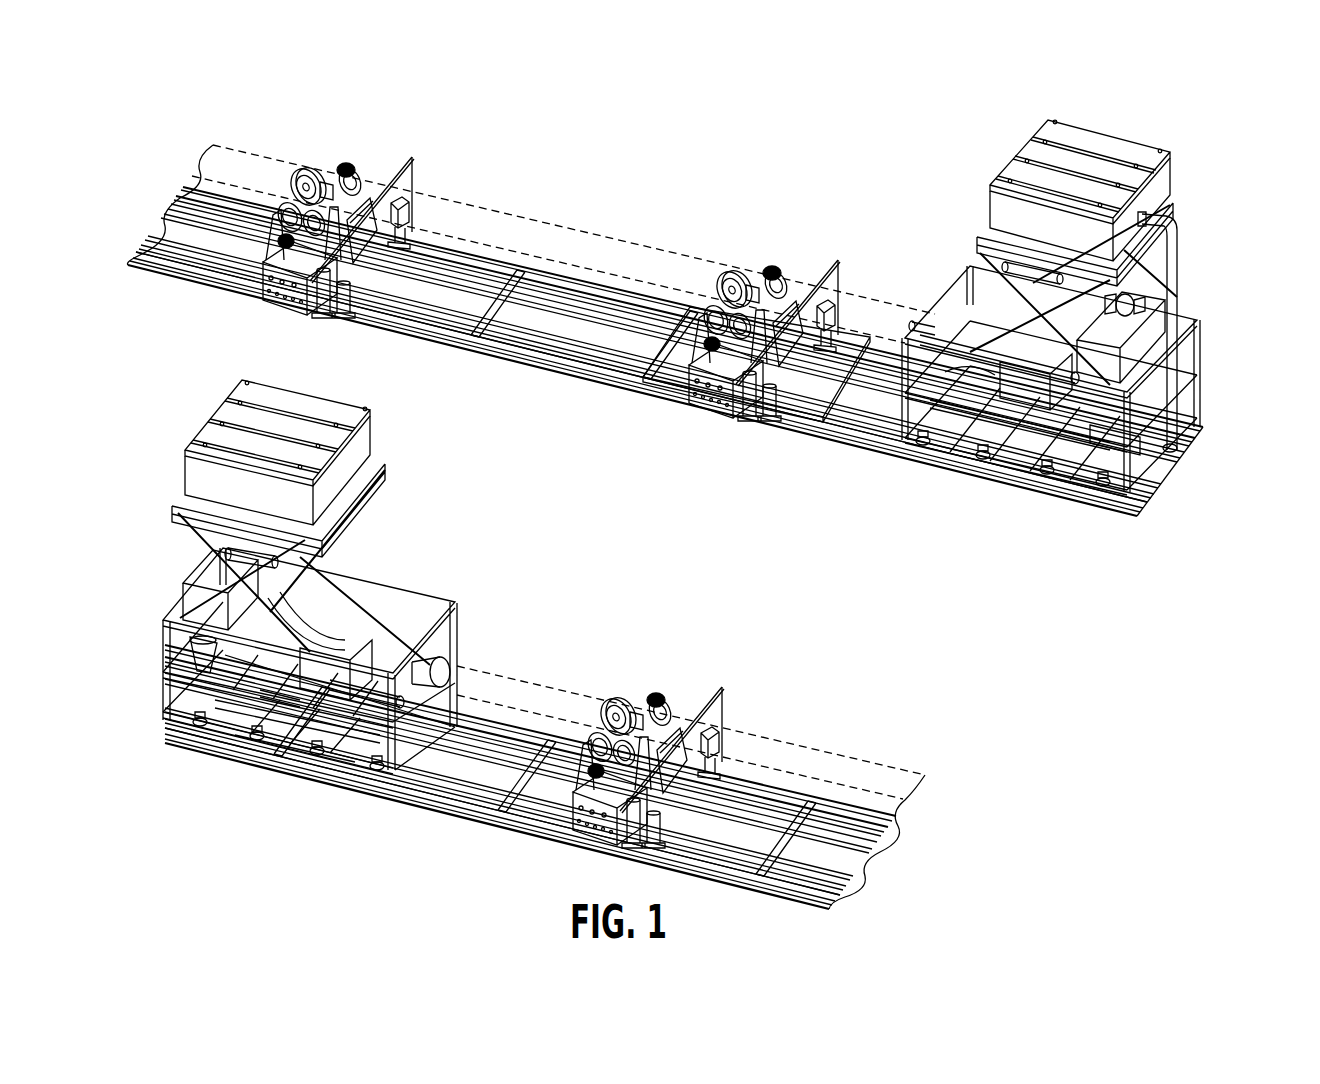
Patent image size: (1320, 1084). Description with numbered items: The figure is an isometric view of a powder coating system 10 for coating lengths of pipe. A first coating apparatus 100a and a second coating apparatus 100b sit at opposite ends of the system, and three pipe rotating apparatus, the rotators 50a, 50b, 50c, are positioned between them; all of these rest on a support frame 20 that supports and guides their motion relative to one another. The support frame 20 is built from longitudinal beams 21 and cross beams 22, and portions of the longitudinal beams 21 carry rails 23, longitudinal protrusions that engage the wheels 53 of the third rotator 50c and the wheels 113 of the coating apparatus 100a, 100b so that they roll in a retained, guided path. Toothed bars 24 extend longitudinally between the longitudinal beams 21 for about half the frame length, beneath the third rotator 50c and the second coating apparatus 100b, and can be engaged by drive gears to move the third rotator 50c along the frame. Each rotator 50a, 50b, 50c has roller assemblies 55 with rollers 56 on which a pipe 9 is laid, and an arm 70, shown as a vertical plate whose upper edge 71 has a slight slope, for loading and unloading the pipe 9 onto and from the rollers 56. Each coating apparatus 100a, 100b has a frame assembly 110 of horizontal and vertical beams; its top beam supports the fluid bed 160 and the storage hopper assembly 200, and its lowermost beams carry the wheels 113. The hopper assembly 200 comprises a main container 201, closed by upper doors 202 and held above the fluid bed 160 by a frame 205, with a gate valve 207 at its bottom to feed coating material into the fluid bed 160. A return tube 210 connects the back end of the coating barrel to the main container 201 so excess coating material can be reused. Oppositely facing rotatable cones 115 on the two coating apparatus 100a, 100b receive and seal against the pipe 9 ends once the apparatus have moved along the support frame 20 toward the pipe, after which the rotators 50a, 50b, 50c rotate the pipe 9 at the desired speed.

The powder coating system 10 is at (783, 118).
The pipe 9 is at (548, 222).
The support frame 20 is at (542, 835).
The longitudinal beams 21 is at (800, 880).
The cross beams 22 is at (762, 853).
The rails 23 is at (588, 370).
The toothed bars 24 is at (502, 336).
The first rotator 50a is at (657, 655).
The second rotator 50b is at (352, 138).
The third rotator 50c is at (775, 228).
The wheels 53 is at (668, 382).
The roller assemblies 55 is at (615, 698).
The rollers 56 is at (629, 702).
The arm 70 is at (724, 702).
The upper edge 71 is at (715, 695).
The first coating apparatus 100a is at (205, 384).
The second coating apparatus 100b is at (1158, 112).
The frame assembly 110 is at (420, 582).
The wheels 113 is at (190, 718).
The cones 115 is at (447, 656).
The fluid bed 160 is at (205, 602).
The storage hopper assembly 200 is at (693, 322).
The main container 201 is at (200, 482).
The upper doors 202 is at (232, 416).
The frame 205 is at (193, 522).
The gate valve 207 is at (220, 553).
The return tube 210 is at (1178, 252).